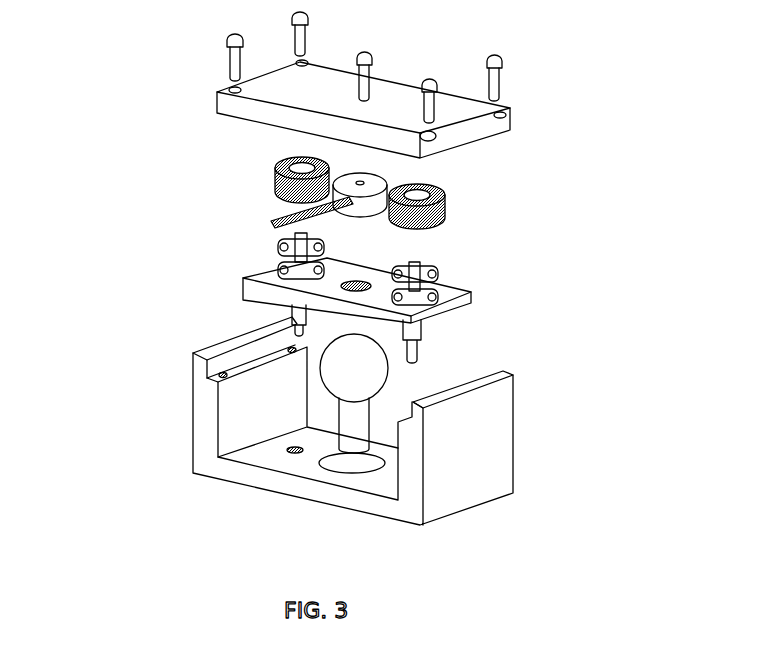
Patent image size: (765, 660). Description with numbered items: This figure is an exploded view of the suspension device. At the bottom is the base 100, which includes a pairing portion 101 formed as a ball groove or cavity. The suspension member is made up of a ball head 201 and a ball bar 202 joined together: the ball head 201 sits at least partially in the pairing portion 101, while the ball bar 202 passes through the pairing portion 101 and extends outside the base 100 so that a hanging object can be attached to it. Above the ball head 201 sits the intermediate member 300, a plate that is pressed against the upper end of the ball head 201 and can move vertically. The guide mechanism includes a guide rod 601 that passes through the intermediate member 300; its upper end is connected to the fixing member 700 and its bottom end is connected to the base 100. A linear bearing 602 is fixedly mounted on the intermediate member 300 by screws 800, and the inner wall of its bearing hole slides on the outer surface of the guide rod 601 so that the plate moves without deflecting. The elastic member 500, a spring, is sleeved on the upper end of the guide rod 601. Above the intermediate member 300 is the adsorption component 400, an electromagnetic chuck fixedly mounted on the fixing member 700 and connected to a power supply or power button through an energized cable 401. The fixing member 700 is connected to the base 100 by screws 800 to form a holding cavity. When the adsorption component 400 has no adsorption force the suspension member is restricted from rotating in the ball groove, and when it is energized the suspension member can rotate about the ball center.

The base 100 is at (240, 463).
The pairing portion 101 is at (352, 463).
The ball head 201 is at (375, 373).
The ball bar 202 is at (352, 425).
The intermediate member 300 is at (437, 318).
The adsorption component 400 is at (387, 184).
The energized cable 401 is at (332, 214).
The elastic member 500 is at (445, 213).
The guide rod 601 is at (277, 260).
The linear bearing 602 is at (278, 270).
The fixing member 700 is at (460, 112).
The screw 800 is at (267, 248).